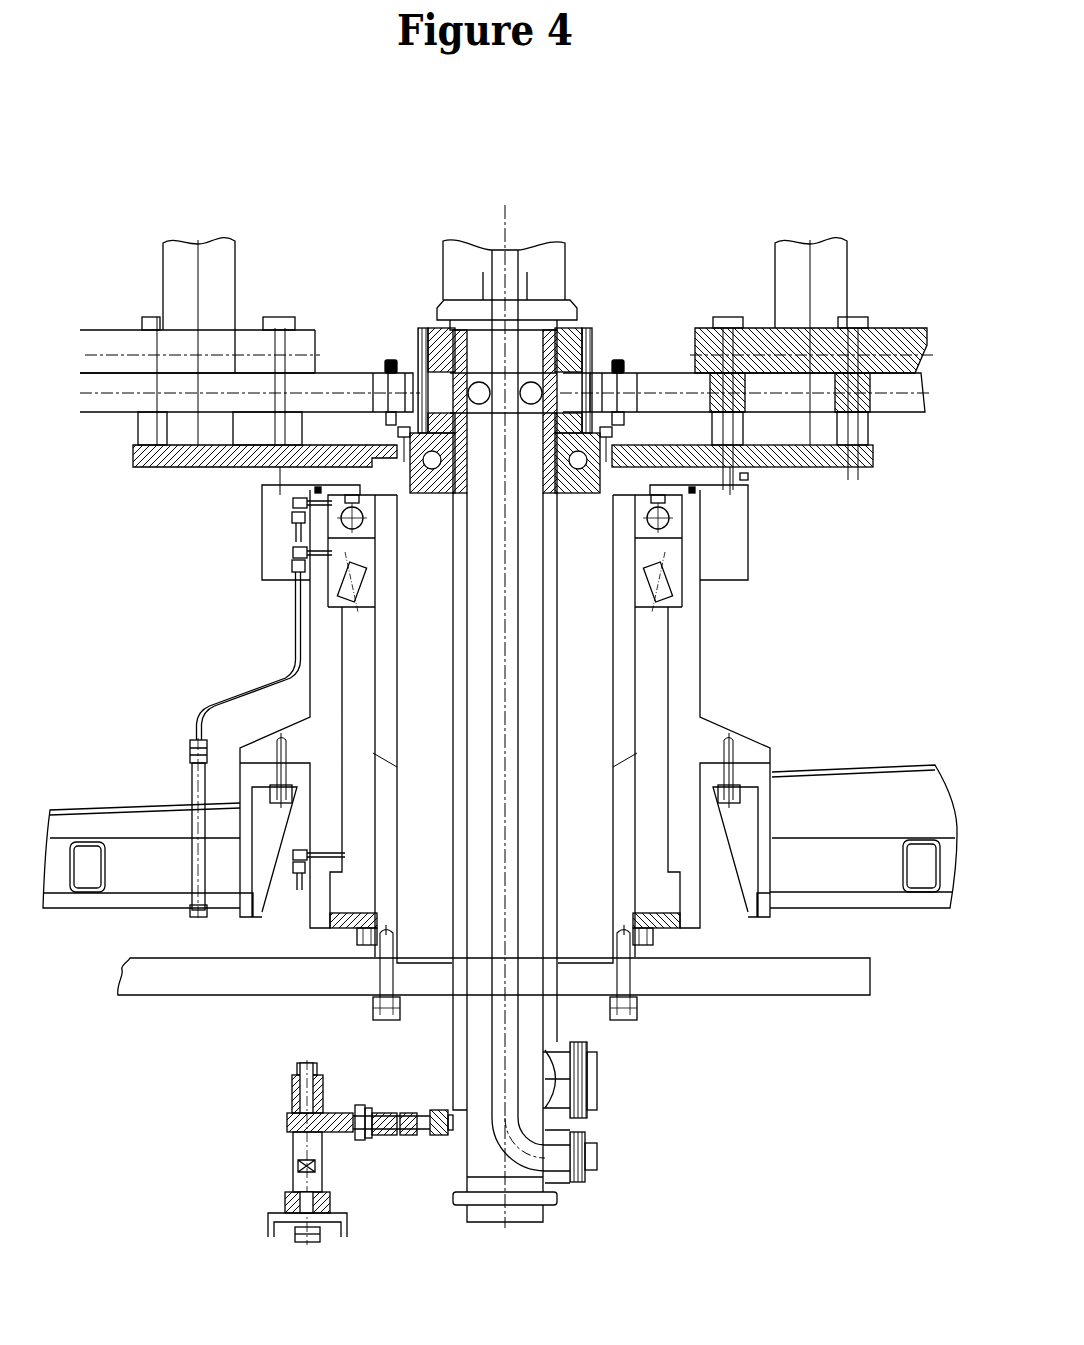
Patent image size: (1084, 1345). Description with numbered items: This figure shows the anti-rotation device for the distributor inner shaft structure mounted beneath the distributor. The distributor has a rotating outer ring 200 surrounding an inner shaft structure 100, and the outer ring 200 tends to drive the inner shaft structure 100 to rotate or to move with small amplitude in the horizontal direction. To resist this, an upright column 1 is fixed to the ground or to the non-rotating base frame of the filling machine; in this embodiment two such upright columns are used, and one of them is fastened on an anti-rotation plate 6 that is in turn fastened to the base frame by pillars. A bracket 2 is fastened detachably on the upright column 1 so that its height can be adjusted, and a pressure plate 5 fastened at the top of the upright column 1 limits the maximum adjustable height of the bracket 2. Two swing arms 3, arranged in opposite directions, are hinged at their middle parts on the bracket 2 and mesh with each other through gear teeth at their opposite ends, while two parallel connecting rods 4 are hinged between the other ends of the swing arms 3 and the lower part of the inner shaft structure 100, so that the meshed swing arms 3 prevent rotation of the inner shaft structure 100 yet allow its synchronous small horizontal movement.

The upright column 1 is at (298, 1150).
The bracket 2 is at (333, 1112).
The swing arm 3 is at (372, 1137).
The connecting rod 4 is at (392, 1112).
The pressure plate 5 is at (297, 1085).
The anti-rotation plate 6 is at (270, 1222).
The inner shaft structure 100 is at (550, 1023).
The outer ring 200 is at (418, 328).